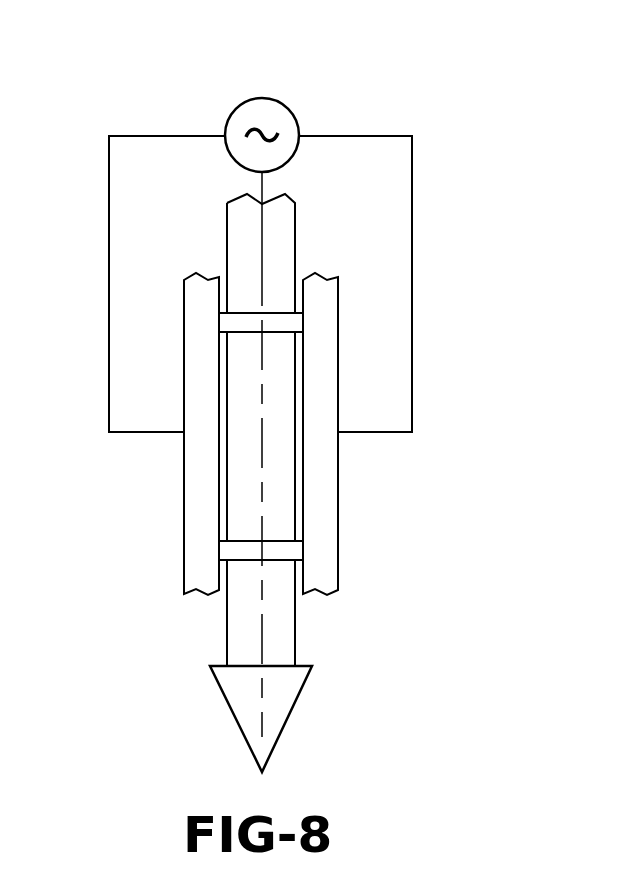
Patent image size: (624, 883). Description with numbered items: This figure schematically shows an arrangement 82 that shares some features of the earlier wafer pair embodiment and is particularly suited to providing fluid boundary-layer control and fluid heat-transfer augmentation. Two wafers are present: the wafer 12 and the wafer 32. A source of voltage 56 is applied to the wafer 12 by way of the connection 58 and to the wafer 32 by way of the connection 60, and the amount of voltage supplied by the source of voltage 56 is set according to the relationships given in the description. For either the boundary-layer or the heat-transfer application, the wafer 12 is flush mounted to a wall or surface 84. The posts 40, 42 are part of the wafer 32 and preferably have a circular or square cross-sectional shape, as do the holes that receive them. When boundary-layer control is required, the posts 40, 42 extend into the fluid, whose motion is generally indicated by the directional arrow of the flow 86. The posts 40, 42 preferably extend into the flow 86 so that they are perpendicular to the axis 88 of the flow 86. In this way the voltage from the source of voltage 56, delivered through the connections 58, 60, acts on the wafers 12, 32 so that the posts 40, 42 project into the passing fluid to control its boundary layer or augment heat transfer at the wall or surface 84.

The arrangement 82 is at (460, 112).
The source of voltage 56 is at (288, 111).
The connection 58 is at (109, 315).
The connection 60 is at (412, 298).
The fluid flow 86 is at (296, 245).
The axis of the flow 88 is at (262, 605).
The post 40 is at (235, 318).
The post 42 is at (277, 553).
The wafer 12 is at (184, 477).
The wall or surface 84 is at (184, 567).
The wafer 32 is at (339, 478).